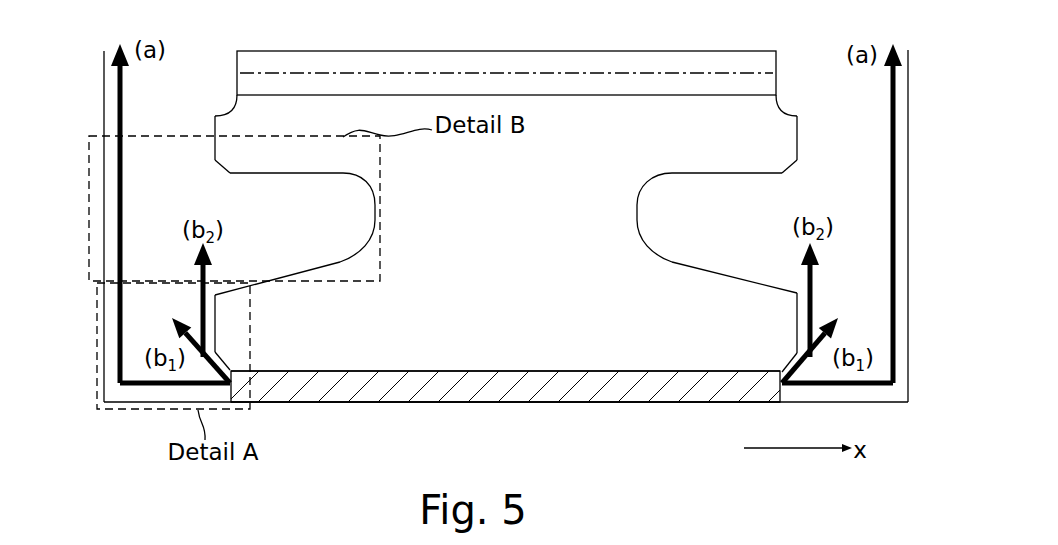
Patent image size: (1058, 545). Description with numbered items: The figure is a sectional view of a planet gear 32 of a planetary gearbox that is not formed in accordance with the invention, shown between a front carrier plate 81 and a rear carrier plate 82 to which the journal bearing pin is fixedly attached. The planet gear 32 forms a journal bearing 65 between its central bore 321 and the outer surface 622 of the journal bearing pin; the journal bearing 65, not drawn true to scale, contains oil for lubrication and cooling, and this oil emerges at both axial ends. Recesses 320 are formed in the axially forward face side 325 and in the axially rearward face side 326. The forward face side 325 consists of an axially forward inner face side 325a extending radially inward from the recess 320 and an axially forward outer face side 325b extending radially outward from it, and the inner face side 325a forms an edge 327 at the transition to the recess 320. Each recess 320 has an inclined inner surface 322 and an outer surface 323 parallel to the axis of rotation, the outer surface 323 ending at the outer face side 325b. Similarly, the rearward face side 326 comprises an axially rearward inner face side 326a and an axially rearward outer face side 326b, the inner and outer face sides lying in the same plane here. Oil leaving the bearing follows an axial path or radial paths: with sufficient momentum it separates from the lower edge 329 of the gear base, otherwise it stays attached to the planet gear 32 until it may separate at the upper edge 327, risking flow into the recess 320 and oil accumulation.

The planet gear 32 is at (772, 113).
The front carrier plate 81 is at (104, 107).
The rear carrier plate 82 is at (908, 234).
The recess 320 is at (508, 219).
The central bore 321 is at (505, 388).
The inclined inner surface 322 is at (288, 270).
The outer surface 323 is at (318, 173).
The axially forward face side 325 is at (210, 115).
The axially forward inner face side 325a is at (215, 333).
The axially forward outer face side 325b is at (215, 148).
The axially rearward face side 326 is at (803, 122).
The axially rearward inner face side 326a is at (797, 342).
The axially rearward outer face side 326b is at (797, 136).
The edge 327 is at (215, 300).
The lower edge 329 is at (215, 355).
The outer surface of the journal bearing pin 622 is at (655, 395).
The journal bearing 65 is at (300, 392).